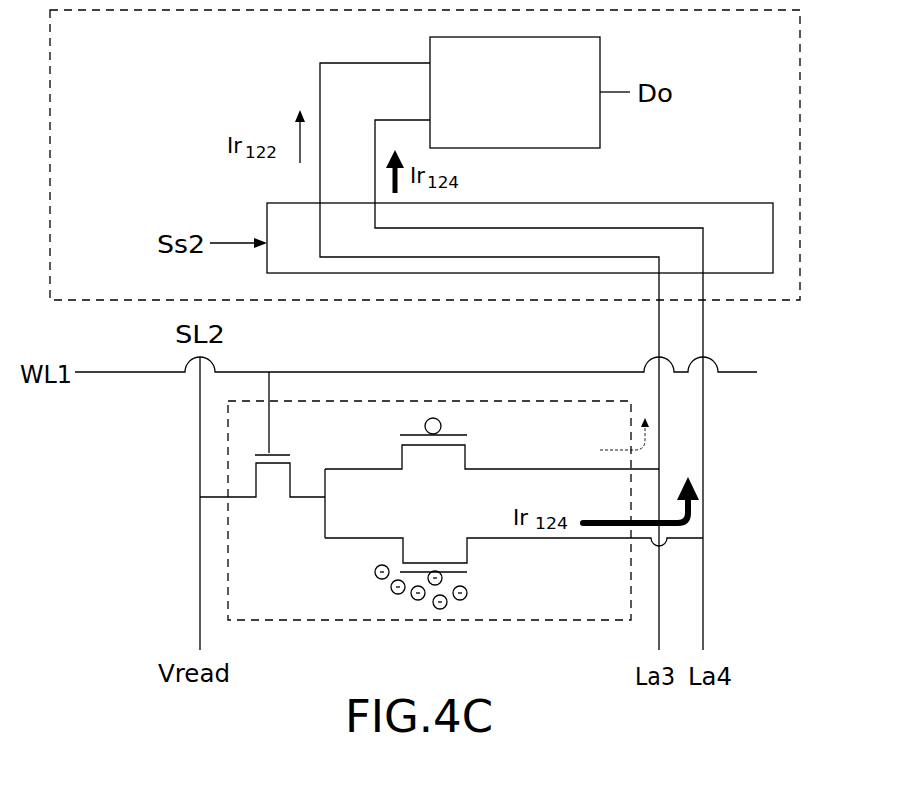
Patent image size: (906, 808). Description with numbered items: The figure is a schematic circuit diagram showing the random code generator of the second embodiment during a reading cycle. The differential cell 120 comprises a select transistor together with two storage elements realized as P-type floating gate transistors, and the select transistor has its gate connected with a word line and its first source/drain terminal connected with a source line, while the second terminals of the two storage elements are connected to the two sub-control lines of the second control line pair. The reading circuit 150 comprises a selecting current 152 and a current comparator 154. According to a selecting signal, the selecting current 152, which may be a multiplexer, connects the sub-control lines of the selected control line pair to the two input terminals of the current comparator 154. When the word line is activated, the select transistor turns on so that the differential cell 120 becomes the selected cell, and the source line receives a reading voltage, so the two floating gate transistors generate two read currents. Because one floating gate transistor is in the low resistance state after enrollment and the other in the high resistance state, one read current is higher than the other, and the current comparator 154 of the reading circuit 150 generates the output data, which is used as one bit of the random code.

The reading circuit 150 is at (163, 95).
The current comparator 154 is at (572, 138).
The selecting current 152 is at (683, 213).
The differential cell 120 is at (288, 608).